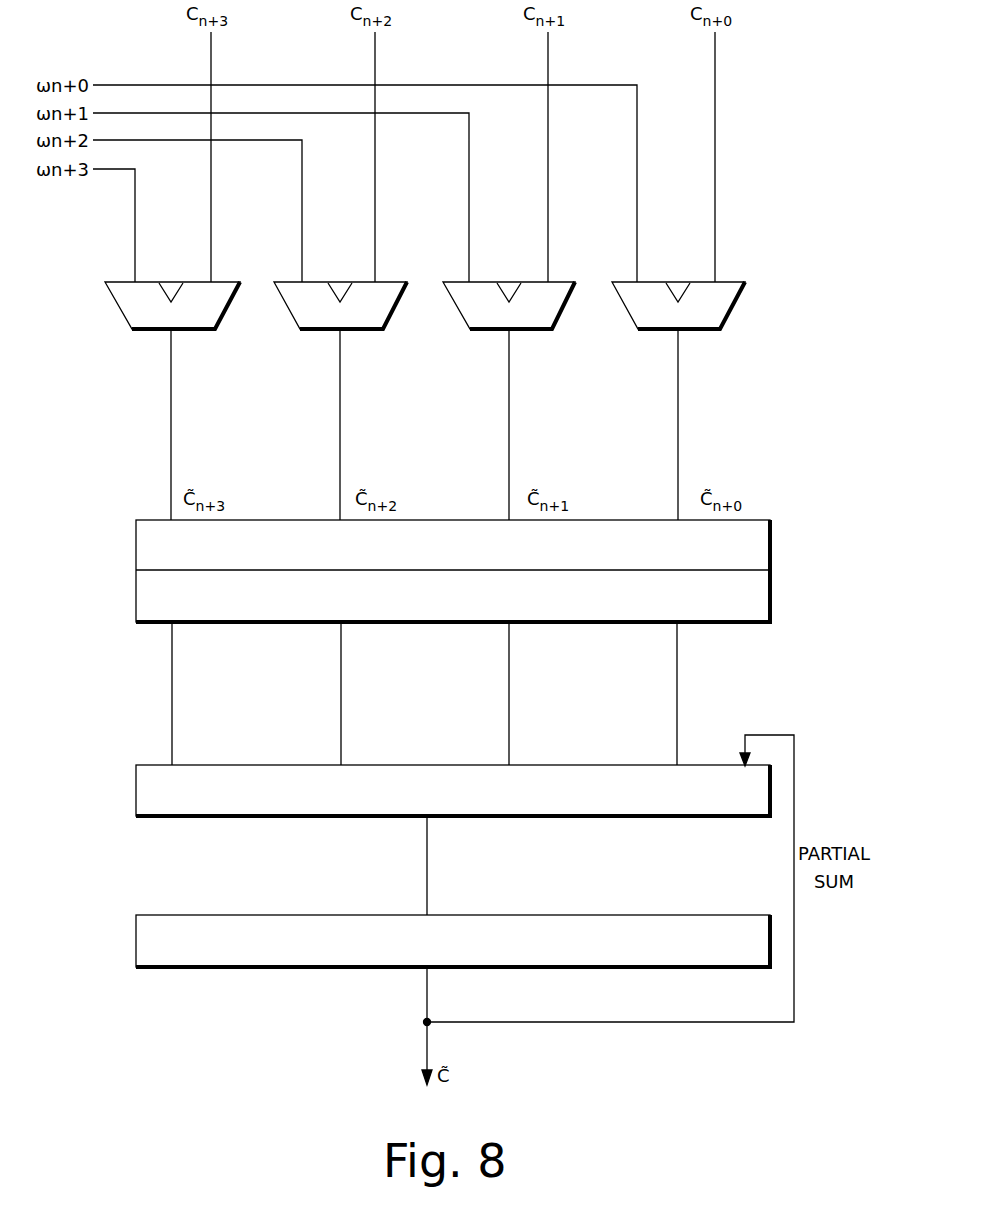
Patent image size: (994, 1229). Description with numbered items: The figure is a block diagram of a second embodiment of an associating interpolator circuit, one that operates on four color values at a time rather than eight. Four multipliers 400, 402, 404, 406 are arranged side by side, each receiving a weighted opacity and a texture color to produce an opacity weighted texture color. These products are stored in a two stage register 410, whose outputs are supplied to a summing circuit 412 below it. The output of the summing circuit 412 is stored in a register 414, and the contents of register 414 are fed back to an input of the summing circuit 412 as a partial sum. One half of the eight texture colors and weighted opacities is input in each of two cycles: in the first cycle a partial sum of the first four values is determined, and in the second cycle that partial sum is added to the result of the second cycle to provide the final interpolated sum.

The multiplier 400 is at (231, 323).
The multiplier 402 is at (400, 323).
The multiplier 404 is at (490, 330).
The multiplier 406 is at (632, 314).
The two stage register 410 is at (136, 548).
The summing circuit 412 is at (136, 791).
The register 414 is at (136, 941).